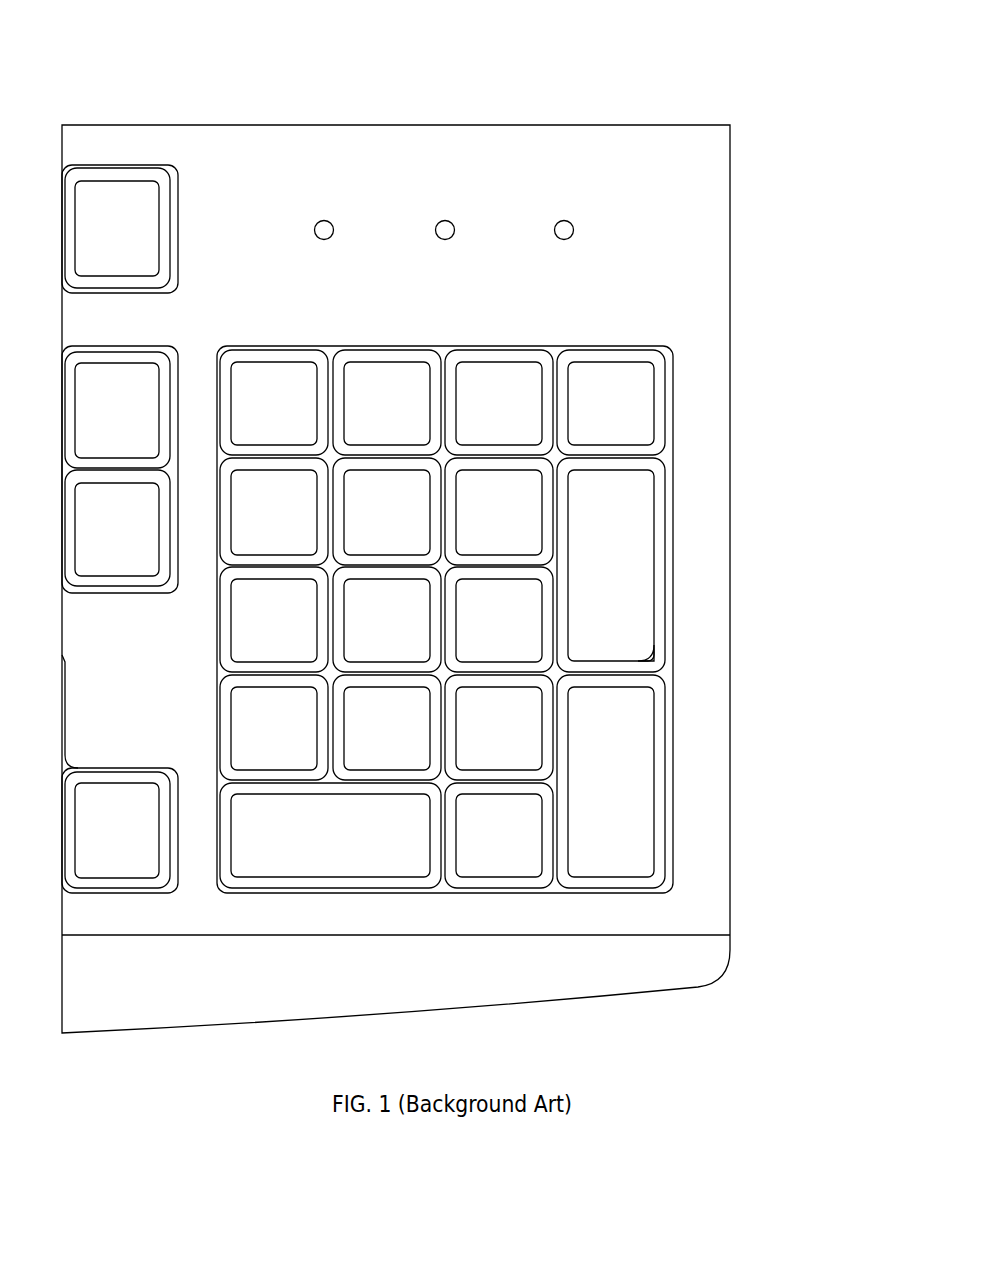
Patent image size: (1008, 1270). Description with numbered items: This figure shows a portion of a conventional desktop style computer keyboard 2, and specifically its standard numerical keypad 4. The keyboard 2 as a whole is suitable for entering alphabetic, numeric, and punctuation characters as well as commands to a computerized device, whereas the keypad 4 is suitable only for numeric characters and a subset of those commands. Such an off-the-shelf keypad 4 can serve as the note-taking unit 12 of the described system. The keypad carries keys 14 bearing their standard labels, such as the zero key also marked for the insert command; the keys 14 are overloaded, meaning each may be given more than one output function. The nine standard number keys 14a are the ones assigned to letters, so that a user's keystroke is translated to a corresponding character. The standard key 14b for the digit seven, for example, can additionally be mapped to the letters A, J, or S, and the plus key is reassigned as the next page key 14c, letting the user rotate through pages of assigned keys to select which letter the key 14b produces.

The computer keyboard 2 is at (198, 125).
The numerical keypad 4 is at (730, 213).
The note-taking unit 12 is at (396, 579).
The keys 14 is at (705, 565).
The number keys 14a is at (483, 750).
The standard key for the digit seven 14b is at (308, 500).
The next page key 14c is at (620, 568).